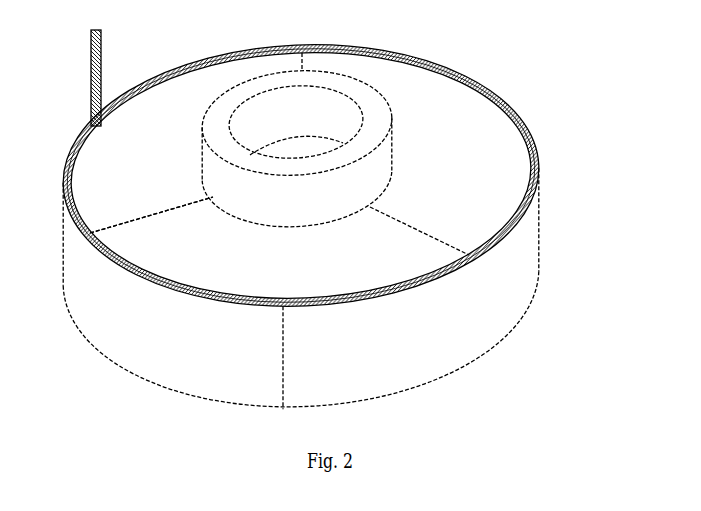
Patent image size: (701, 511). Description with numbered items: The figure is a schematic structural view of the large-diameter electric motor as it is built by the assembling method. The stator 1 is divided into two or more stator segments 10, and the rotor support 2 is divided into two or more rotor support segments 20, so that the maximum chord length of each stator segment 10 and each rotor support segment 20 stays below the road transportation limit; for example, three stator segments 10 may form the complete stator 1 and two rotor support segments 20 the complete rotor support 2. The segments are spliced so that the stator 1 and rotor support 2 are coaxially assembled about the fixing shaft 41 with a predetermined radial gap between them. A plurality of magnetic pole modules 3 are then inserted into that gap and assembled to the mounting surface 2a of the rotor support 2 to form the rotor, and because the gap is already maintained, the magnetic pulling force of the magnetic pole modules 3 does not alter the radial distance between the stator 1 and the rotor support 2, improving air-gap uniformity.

The stator 1 is at (182, 199).
The rotor support 2 is at (332, 217).
The mounting surface 2a is at (125, 91).
The magnetic pole module 3 is at (93, 73).
The stator segment 10 is at (203, 80).
The rotor support segment 20 is at (510, 310).
The fixing shaft 41 is at (385, 162).